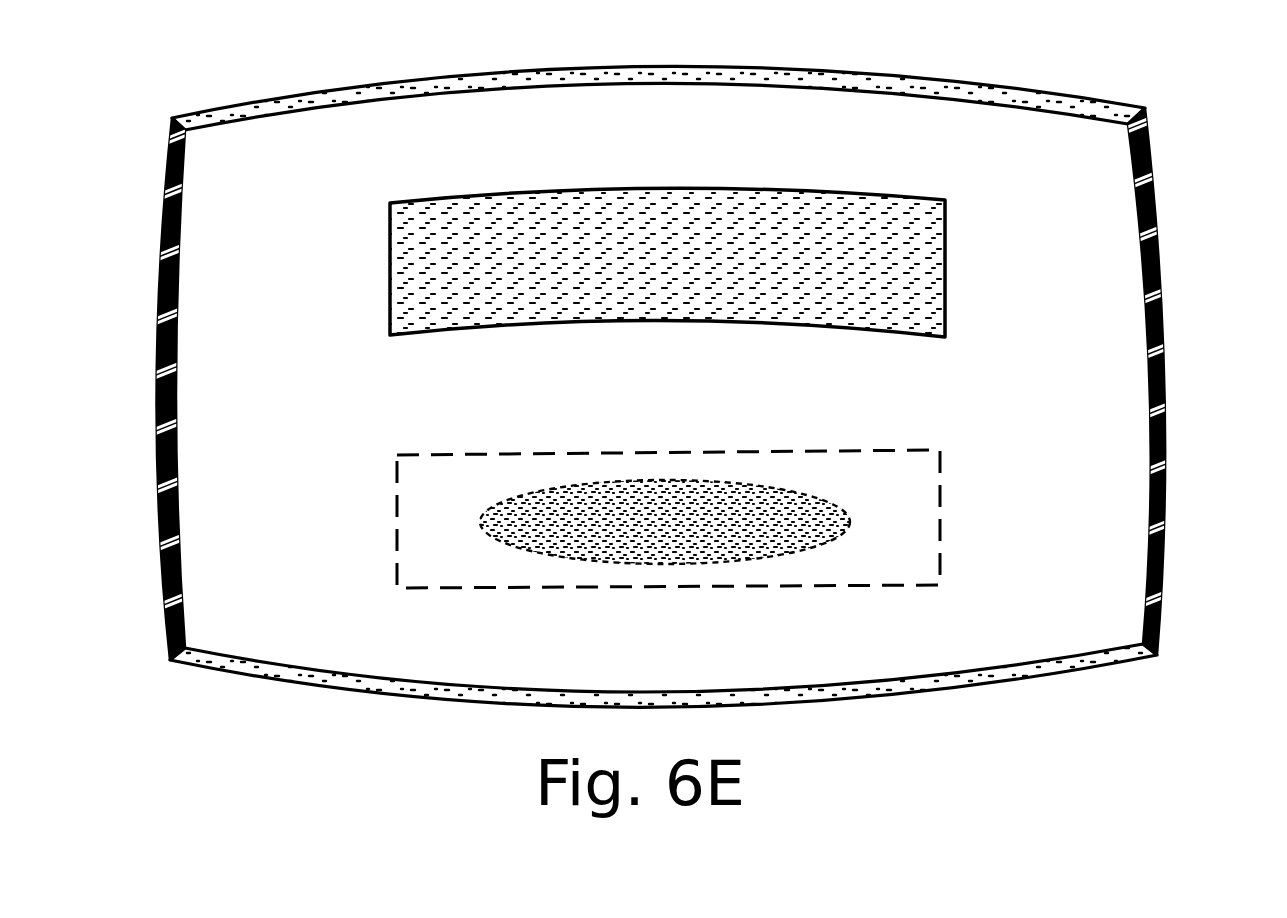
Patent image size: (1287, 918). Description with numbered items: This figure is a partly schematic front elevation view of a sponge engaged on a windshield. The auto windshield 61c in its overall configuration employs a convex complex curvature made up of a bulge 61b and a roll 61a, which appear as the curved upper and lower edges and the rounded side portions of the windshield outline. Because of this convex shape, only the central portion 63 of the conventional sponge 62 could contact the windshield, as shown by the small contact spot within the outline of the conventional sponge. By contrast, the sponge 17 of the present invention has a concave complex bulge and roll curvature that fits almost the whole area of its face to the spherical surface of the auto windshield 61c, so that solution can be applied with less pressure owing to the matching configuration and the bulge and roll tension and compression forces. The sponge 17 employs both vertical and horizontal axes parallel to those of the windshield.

The sponge 17 is at (655, 206).
The roll 61a is at (1158, 223).
The bulge 61b is at (968, 85).
The auto windshield 61c is at (280, 183).
The conventional sponge 62 is at (447, 493).
The central portion 63 is at (658, 515).